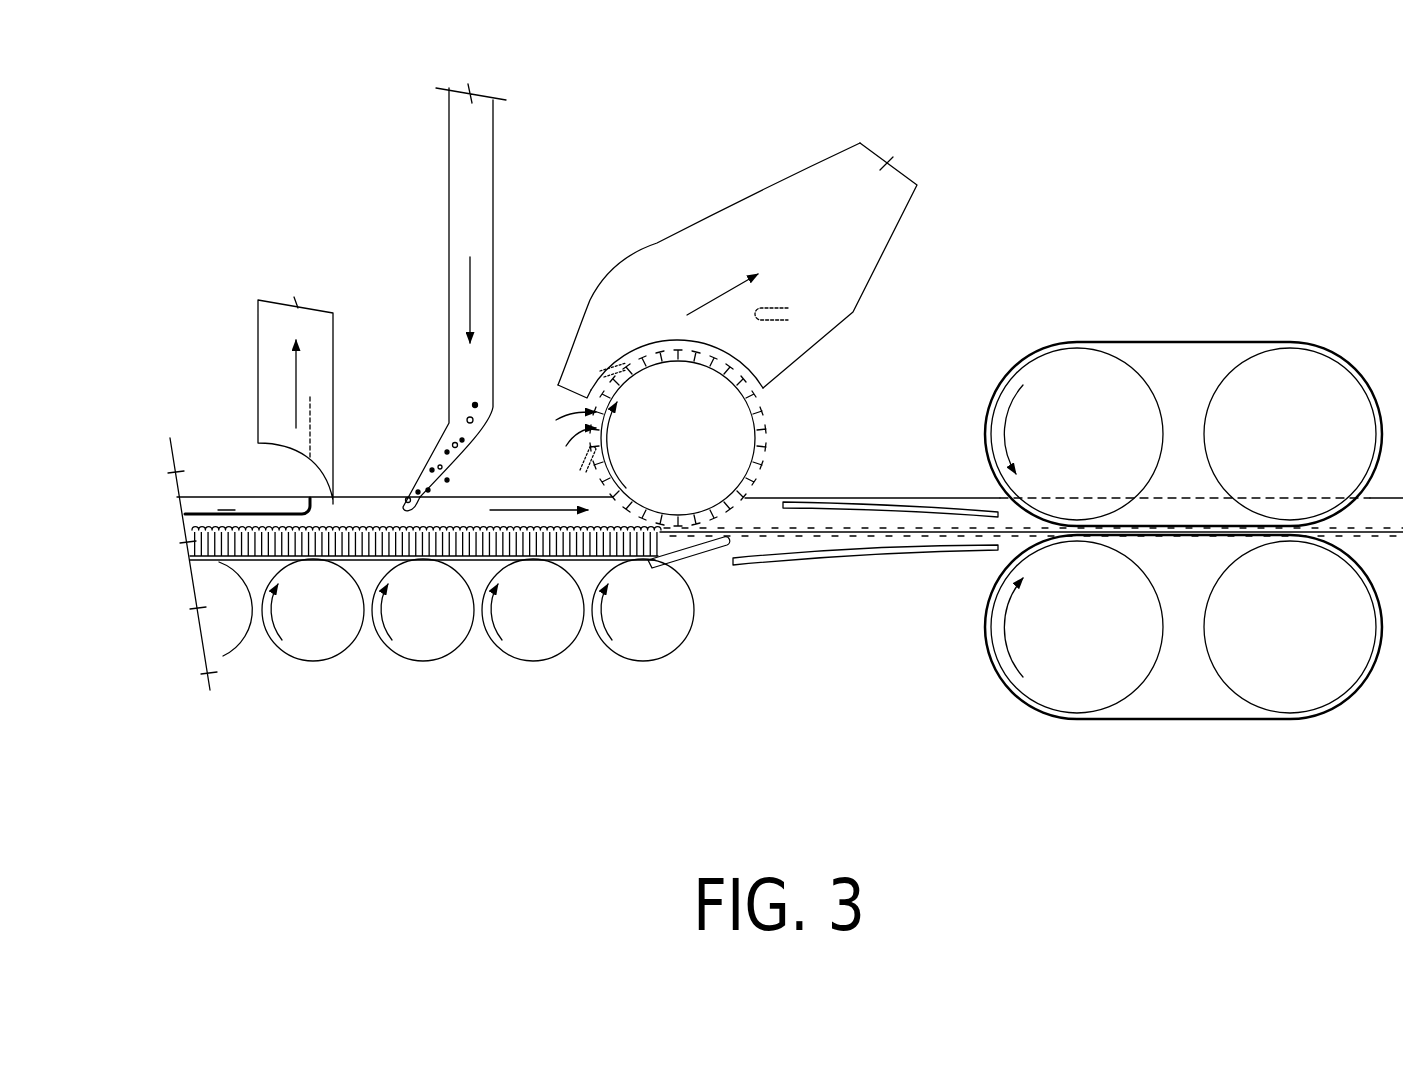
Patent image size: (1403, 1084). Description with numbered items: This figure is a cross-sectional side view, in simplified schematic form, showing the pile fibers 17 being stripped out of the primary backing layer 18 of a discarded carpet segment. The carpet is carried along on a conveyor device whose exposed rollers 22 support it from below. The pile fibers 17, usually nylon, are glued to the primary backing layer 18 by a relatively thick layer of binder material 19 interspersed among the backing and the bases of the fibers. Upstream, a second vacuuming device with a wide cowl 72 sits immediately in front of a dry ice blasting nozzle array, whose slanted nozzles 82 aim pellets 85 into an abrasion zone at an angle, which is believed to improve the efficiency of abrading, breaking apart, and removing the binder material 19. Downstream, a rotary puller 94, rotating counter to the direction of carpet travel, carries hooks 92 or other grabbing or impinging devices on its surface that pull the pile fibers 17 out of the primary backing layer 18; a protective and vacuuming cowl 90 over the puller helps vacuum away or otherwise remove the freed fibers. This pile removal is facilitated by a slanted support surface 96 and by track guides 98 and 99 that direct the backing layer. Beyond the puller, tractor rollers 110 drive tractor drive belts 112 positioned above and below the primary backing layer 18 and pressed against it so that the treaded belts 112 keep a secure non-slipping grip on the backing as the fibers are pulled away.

The pile fibers 17 is at (606, 362).
The primary backing layer 18 is at (754, 522).
The binder material 19 is at (296, 511).
The exposed rollers 22 is at (527, 663).
The wide cowl 72 is at (333, 333).
The nozzles 82 is at (495, 148).
The particulate material 85 is at (445, 425).
The protective and vacuuming cowl 90 is at (752, 196).
The hooks 92 is at (560, 428).
The rotary puller 94 is at (768, 422).
The slanted support surface 96 is at (690, 560).
The track guide 98 is at (847, 552).
The track guide 99 is at (853, 503).
The tractor rollers 110 is at (1218, 387).
The tractor drive belts 112 is at (1134, 340).